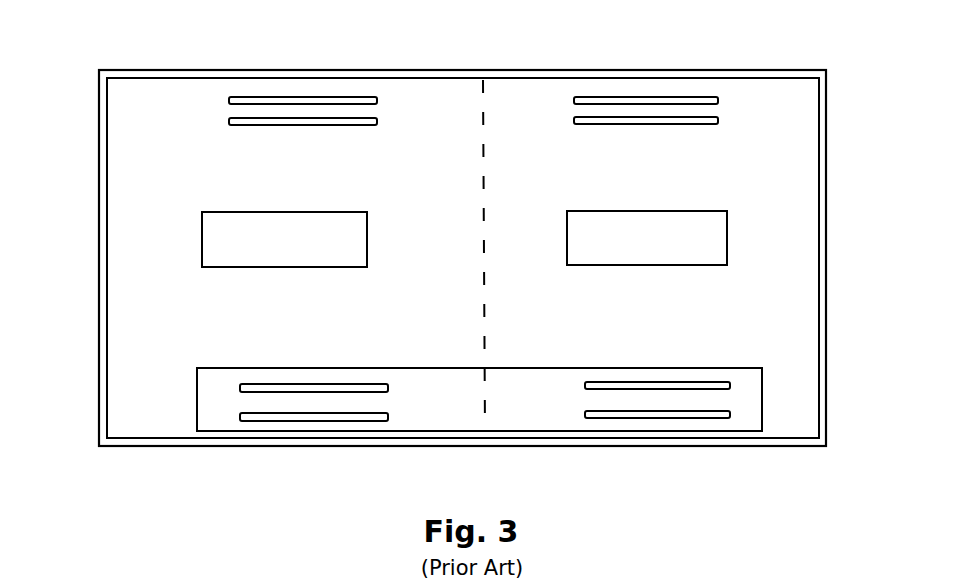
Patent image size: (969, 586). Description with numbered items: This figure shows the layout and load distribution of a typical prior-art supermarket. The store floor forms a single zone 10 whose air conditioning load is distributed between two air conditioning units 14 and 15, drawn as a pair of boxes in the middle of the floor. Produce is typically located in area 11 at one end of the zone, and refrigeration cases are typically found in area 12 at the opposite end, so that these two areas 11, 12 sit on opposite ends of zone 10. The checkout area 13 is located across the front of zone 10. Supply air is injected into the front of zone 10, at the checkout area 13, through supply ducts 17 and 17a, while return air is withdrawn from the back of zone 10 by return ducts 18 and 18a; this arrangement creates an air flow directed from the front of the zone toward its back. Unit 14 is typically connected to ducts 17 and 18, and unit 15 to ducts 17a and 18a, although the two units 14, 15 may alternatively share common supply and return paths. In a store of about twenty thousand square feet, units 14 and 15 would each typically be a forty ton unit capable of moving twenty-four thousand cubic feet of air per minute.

The zone 10 is at (99, 297).
The area 11 is at (821, 170).
The area 12 is at (107, 227).
The checkout area 13 is at (537, 431).
The air conditioning unit 14 is at (235, 267).
The air conditioning unit 15 is at (727, 257).
The supply duct 17 is at (240, 388).
The supply duct 17a is at (730, 386).
The return duct 18 is at (229, 121).
The return duct 18a is at (718, 120).